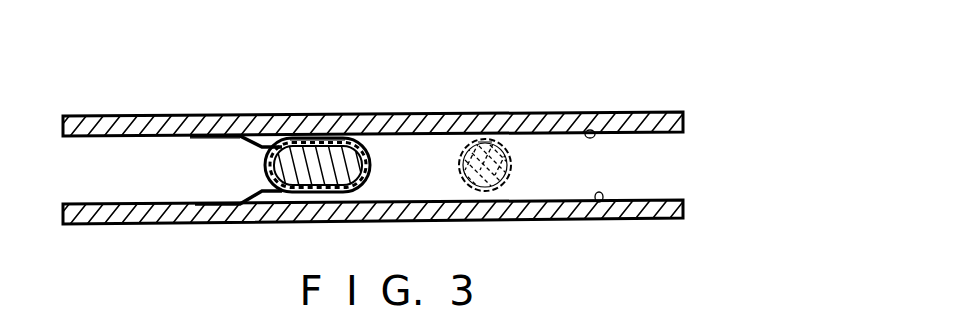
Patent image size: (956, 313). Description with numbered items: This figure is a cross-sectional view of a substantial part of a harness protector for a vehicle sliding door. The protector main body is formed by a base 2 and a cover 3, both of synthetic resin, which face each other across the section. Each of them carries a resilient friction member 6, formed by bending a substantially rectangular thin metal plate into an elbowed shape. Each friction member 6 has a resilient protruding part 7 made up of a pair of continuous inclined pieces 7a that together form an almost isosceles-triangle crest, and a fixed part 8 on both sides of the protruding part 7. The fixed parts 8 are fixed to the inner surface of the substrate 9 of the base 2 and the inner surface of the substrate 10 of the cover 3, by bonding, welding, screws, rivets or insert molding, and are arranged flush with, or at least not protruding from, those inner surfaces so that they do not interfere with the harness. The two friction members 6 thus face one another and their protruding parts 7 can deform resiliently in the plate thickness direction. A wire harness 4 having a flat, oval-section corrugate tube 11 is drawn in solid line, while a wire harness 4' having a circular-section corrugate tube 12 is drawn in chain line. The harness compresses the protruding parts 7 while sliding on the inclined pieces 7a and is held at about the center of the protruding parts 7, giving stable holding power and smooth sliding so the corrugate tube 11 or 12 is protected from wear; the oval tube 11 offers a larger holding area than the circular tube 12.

The base 2 is at (647, 112).
The cover 3 is at (640, 219).
The wire harness 4 is at (340, 165).
The wire harness 4' is at (503, 165).
The friction member 6 is at (230, 144).
The protruding part 7 is at (265, 143).
The inclined piece 7a is at (262, 126).
The fixed part 8 is at (227, 118).
The substrate 9 is at (591, 130).
The substrate 10 is at (597, 202).
The corrugate tube 11 is at (370, 138).
The corrugate tube 12 is at (508, 140).